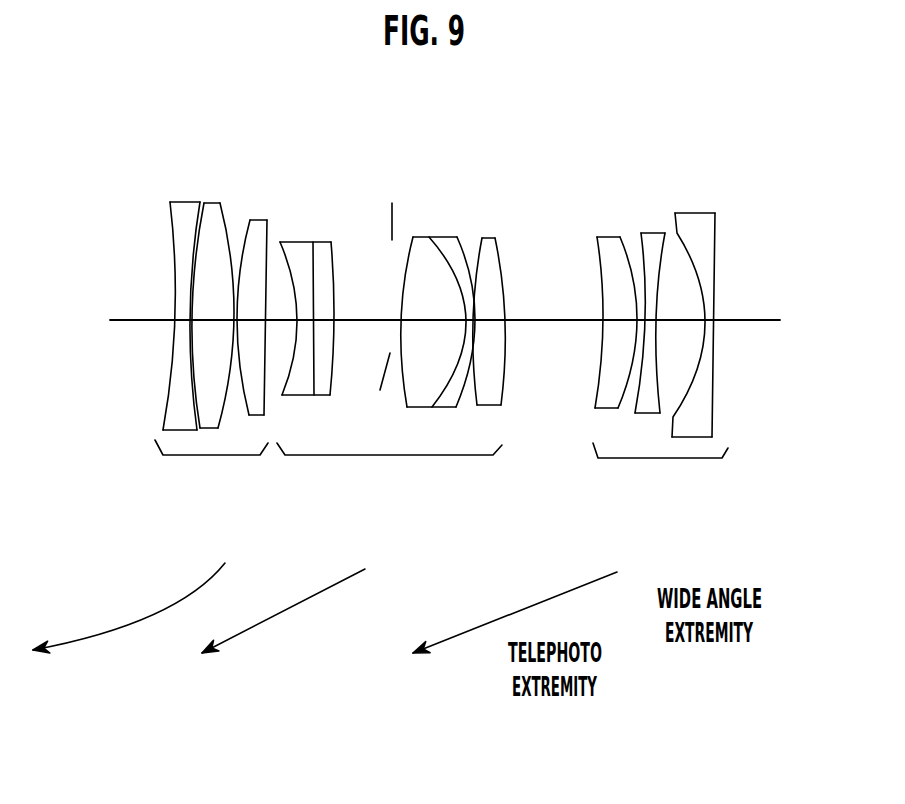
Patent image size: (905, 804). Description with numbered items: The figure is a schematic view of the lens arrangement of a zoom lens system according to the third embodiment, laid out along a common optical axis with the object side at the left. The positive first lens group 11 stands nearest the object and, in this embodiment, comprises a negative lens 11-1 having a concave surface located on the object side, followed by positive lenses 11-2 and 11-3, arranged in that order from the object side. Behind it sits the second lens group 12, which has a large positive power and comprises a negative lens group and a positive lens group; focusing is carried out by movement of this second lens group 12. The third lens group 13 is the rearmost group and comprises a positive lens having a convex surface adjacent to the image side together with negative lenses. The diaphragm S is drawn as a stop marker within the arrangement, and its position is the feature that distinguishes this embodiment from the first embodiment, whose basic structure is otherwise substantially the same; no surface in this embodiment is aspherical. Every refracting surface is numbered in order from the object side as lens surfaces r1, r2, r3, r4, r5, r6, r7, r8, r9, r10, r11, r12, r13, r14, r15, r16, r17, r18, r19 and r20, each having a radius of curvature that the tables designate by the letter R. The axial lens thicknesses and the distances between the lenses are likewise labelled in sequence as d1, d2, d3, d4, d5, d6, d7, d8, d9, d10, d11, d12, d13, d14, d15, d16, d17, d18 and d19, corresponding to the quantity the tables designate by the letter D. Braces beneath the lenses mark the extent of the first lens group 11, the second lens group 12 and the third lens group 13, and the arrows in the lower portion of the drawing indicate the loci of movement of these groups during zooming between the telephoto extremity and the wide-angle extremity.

The first lens group 11 is at (193, 457).
The negative lens 11-1 is at (178, 220).
The positive lens 11-2 is at (207, 258).
The positive lens 11-3 is at (252, 297).
The second lens group 12 is at (397, 458).
The third lens group 13 is at (656, 460).
The diaphragm S is at (376, 304).
The lens surface r1 is at (170, 202).
The lens surface r2 is at (200, 203).
The lens surface r3 is at (204, 204).
The lens surface r4 is at (220, 204).
The lens surface r5 is at (250, 220).
The lens surface r6 is at (267, 220).
The lens surface r7 is at (280, 242).
The lens surface r8 is at (313, 242).
The lens surface r9 is at (331, 242).
The lens surface r10 is at (413, 237).
The lens surface r11 is at (429, 237).
The lens surface r12 is at (457, 237).
The lens surface r13 is at (482, 238).
The lens surface r14 is at (495, 238).
The lens surface r15 is at (597, 237).
The lens surface r16 is at (620, 237).
The lens surface r17 is at (641, 233).
The lens surface r18 is at (665, 233).
The lens surface r19 is at (675, 213).
The lens surface r20 is at (715, 213).
The lens thickness or distance d1 is at (177, 320).
The lens thickness or distance d2 is at (190, 320).
The lens thickness or distance d3 is at (210, 320).
The lens thickness or distance d4 is at (233, 320).
The lens thickness or distance d5 is at (250, 320).
The lens thickness or distance d6 is at (280, 320).
The lens thickness or distance d7 is at (305, 320).
The lens thickness or distance d8 is at (323, 320).
The lens thickness or distance d9 is at (367, 320).
The lens thickness or distance d10 is at (430, 320).
The lens thickness or distance d11 is at (473, 320).
The lens thickness or distance d12 is at (472, 320).
The lens thickness or distance d13 is at (488, 320).
The lens thickness or distance d14 is at (552, 320).
The lens thickness or distance d15 is at (619, 320).
The lens thickness or distance d16 is at (641, 320).
The lens thickness or distance d17 is at (663, 320).
The lens thickness or distance d18 is at (690, 320).
The lens thickness or distance d19 is at (714, 320).